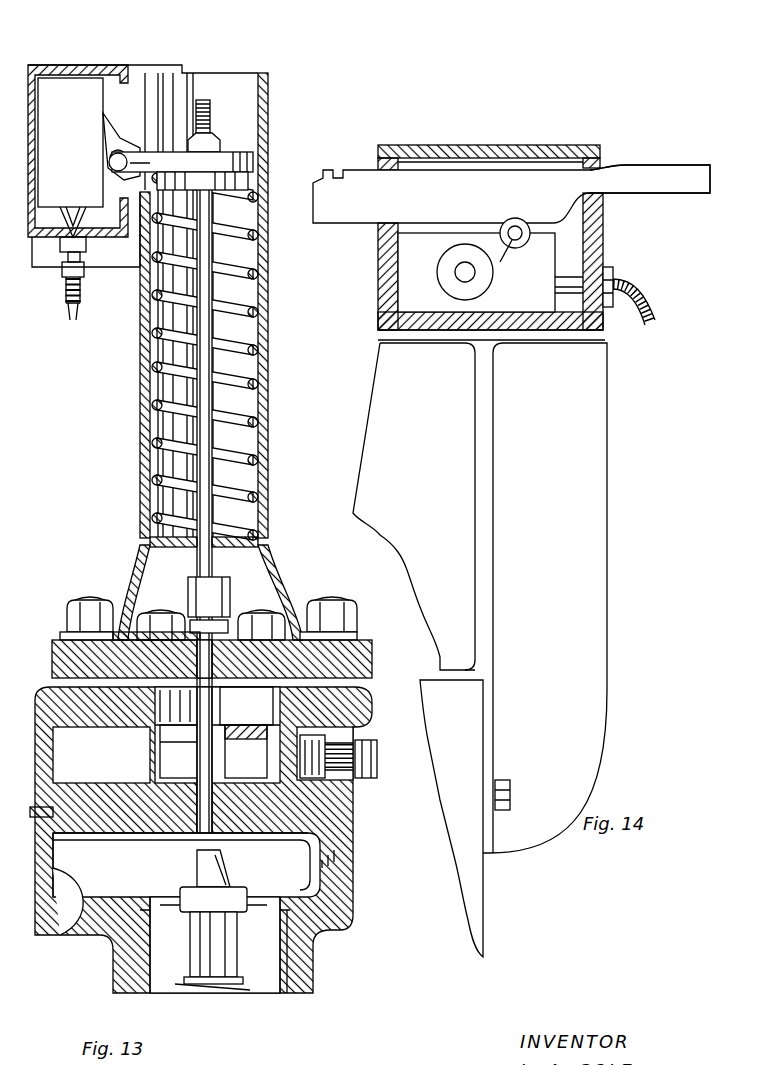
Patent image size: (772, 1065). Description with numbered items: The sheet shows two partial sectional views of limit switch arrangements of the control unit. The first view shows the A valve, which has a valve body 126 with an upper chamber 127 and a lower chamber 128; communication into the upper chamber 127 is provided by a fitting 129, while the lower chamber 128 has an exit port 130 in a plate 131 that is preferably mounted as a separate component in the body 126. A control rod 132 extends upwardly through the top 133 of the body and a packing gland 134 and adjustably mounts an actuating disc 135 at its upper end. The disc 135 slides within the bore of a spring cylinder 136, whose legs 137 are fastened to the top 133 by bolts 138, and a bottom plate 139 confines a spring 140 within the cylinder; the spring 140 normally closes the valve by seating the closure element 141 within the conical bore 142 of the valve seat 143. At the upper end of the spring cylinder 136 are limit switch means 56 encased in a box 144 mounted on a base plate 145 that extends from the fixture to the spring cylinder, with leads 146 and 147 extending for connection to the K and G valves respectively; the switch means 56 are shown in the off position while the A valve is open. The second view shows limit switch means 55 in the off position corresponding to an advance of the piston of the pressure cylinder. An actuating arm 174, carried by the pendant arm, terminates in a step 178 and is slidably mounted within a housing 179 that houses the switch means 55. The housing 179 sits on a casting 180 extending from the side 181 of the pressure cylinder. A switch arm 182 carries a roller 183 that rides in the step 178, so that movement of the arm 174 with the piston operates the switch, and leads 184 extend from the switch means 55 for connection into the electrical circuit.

In FIG. 13, the limit switch means 56 is at (76, 92).
In FIG. 13, the box 144 is at (63, 68).
In FIG. 13, the base plate 145 is at (143, 70).
In FIG. 13, the lead 146 is at (70, 320).
In FIG. 13, the lead 147 is at (80, 310).
In FIG. 13, the actuating disc 135 is at (240, 162).
In FIG. 13, the spring cylinder 136 is at (270, 440).
In FIG. 13, the spring 140 is at (247, 418).
In FIG. 13, the legs 137 is at (283, 565).
In FIG. 13, the bottom plate 139 is at (150, 575).
In FIG. 13, the bolts 138 is at (155, 626).
In FIG. 13, the packing gland 134 is at (226, 597).
In FIG. 13, the top 133 is at (364, 660).
In FIG. 13, the control rod 132 is at (213, 704).
In FIG. 13, the fitting 129 is at (370, 752).
In FIG. 13, the upper chamber 127 is at (312, 768).
In FIG. 13, the valve body 126 is at (337, 935).
In FIG. 13, the lower chamber 128 is at (316, 876).
In FIG. 13, the plate 131 is at (50, 856).
In FIG. 13, the exit port 130 is at (72, 920).
In FIG. 13, the valve seat 143 is at (134, 834).
In FIG. 13, the conical bore 142 is at (182, 834).
In FIG. 13, the closure element 141 is at (216, 874).
In FIG. 14, the housing 179 is at (466, 148).
In FIG. 14, the actuating arm 174 is at (370, 214).
In FIG. 14, the step 178 is at (614, 176).
In FIG. 14, the limit switch means 55 is at (558, 258).
In FIG. 14, the switch arm 182 is at (498, 235).
In FIG. 14, the roller 183 is at (518, 220).
In FIG. 14, the leads 184 is at (636, 328).
In FIG. 14, the casting 180 is at (607, 416).
In FIG. 14, the side 181 is at (483, 890).